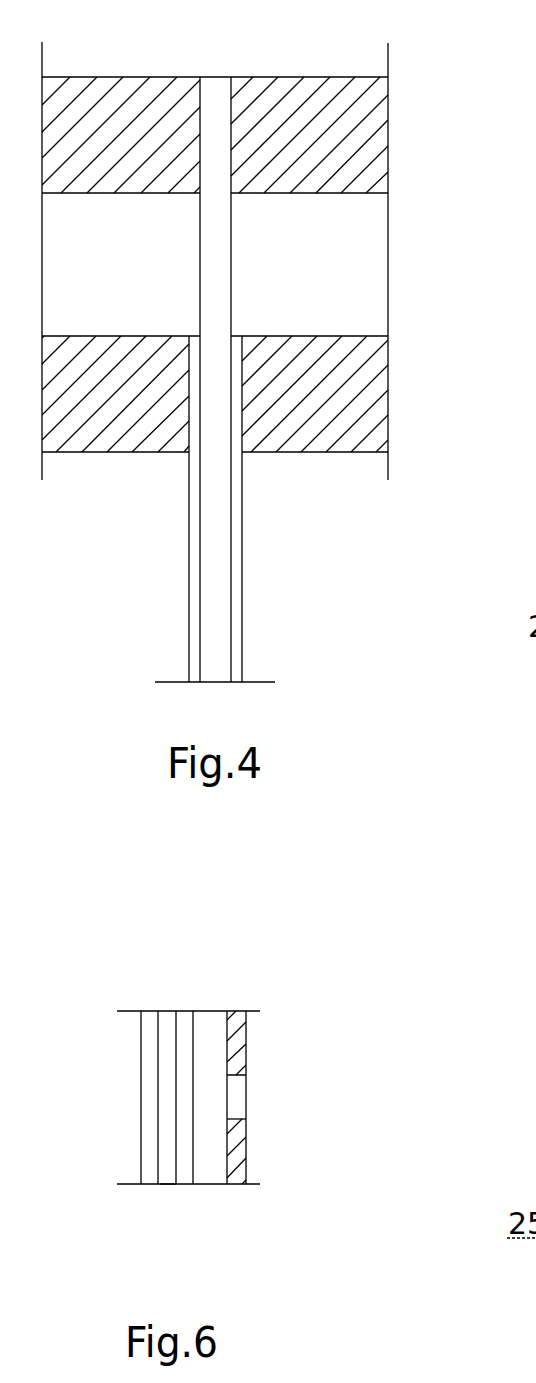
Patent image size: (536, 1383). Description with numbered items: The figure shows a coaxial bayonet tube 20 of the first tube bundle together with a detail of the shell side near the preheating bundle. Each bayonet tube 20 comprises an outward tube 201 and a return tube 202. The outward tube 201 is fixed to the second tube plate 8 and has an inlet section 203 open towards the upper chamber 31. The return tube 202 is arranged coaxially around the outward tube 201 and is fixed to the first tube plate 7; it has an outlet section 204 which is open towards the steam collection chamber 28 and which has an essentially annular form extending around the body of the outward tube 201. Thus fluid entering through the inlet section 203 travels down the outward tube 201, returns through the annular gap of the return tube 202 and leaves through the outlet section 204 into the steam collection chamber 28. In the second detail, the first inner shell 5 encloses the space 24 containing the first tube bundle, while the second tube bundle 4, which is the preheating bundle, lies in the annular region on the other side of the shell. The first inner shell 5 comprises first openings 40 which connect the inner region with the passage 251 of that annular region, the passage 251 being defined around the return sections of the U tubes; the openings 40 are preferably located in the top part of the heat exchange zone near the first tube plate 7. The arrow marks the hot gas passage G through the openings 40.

In FIG. 4, the upper chamber 31 is at (168, 48).
In FIG. 4, the inlet section 203 is at (213, 77).
In FIG. 4, the second tube plate 8 is at (367, 121).
In FIG. 4, the outward tube 201 is at (200, 215).
In FIG. 4, the steam collection chamber 28 is at (339, 293).
In FIG. 4, the outlet section 204 is at (193, 335).
In FIG. 4, the first tube plate 7 is at (366, 401).
In FIG. 4, the return tube 202 is at (189, 537).
In FIG. 4, the bayonet tube 20 is at (280, 588).
In FIG. 6, the second tube bundle 4 is at (178, 997).
In FIG. 6, the first inner shell 5 is at (247, 1039).
In FIG. 6, the first openings 40 is at (243, 1082).
In FIG. 6, the space 24 is at (349, 1146).
In FIG. 6, the hot gas passage G is at (217, 1111).
In FIG. 6, the passage 251 is at (168, 1185).